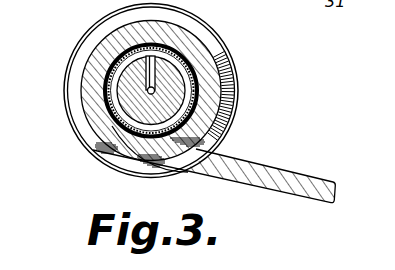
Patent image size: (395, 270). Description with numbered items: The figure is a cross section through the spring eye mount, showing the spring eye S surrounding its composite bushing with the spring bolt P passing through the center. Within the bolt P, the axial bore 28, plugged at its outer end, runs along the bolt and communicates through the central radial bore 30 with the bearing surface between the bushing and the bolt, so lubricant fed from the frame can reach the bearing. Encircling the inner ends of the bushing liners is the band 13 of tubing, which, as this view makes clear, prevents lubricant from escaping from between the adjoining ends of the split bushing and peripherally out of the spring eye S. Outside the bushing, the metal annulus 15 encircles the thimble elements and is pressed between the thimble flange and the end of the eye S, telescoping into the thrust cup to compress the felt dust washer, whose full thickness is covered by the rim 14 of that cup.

The spring eye S is at (180, 35).
The central radial bore 30 is at (153, 72).
The band of tubing 13 is at (197, 87).
The rim of thrust cup 14 is at (237, 108).
The axial bore 28 is at (147, 90).
The metal annulus 15 is at (82, 118).
The spring bolt P is at (116, 128).